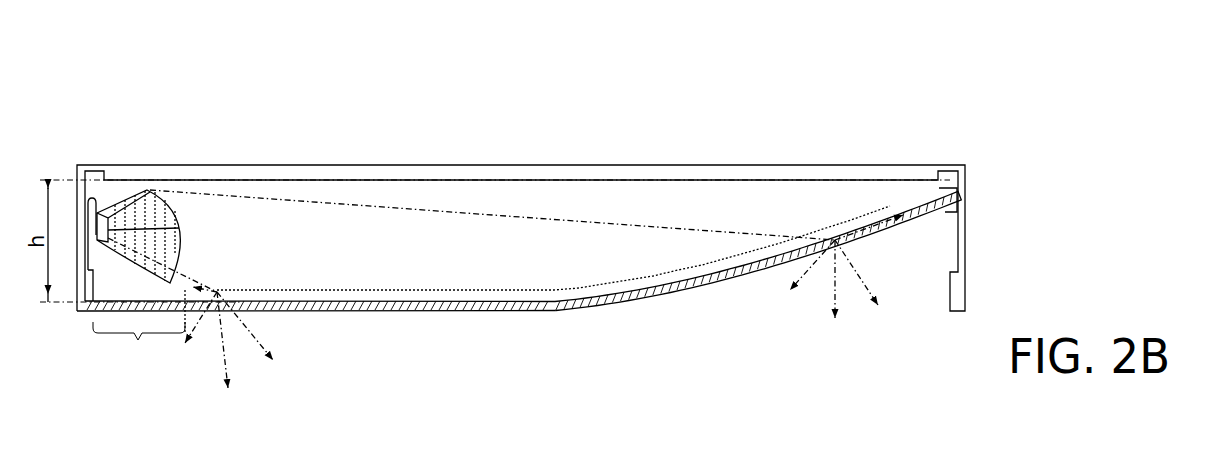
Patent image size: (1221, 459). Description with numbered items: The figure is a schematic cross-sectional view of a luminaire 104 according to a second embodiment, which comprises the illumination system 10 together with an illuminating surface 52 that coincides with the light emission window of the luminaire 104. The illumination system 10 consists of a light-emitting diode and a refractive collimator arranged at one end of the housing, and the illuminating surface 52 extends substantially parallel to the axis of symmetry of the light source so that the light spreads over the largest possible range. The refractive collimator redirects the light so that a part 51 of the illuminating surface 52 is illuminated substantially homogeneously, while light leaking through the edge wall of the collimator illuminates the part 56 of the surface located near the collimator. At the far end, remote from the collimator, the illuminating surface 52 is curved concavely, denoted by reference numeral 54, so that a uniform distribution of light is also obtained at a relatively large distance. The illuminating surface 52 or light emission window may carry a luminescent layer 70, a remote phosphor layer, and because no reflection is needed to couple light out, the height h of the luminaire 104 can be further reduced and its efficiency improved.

The luminaire 104 is at (851, 97).
The illumination system 10 is at (171, 192).
The luminescent layer 70 is at (410, 312).
The illuminating surface 52 is at (520, 300).
The homogeneously illuminated part 51 is at (553, 248).
The concavely curved portion 54 is at (705, 287).
The near part of illuminating surface 56 is at (139, 330).